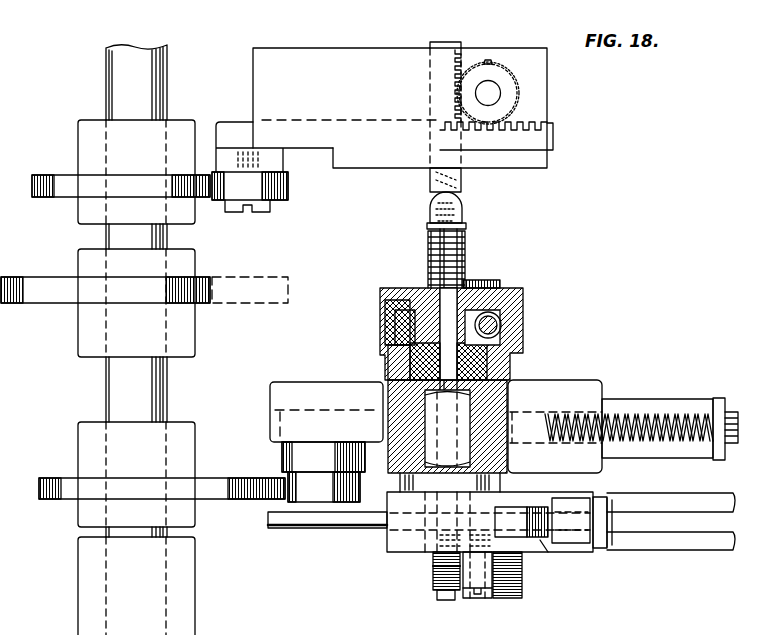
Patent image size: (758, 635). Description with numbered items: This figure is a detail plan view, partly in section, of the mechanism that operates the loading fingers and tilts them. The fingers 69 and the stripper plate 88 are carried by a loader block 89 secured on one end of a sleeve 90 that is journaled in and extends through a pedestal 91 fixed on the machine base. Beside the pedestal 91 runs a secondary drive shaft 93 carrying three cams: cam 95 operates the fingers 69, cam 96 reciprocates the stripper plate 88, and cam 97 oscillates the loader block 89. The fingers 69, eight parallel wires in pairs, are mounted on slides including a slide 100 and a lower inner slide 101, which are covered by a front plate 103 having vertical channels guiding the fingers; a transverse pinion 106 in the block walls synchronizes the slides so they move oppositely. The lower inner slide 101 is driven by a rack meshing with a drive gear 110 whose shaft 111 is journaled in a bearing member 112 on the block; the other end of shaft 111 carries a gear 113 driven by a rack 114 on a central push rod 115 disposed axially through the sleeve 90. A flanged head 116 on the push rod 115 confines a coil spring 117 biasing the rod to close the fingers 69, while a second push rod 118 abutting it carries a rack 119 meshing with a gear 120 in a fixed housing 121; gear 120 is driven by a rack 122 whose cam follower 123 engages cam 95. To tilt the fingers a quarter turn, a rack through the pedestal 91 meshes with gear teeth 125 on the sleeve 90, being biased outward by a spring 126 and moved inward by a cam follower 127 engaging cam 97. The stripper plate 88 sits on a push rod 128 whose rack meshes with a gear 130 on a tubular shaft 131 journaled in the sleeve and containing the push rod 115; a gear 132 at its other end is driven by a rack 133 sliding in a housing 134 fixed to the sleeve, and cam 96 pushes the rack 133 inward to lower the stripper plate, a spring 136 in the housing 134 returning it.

The fingers 69 is at (684, 507).
The stripper plate 88 is at (610, 542).
The loader block 89 is at (538, 548).
The sleeve 90 is at (488, 452).
The pedestal 91 is at (510, 384).
The secondary drive shaft 93 is at (106, 382).
The cam 95 is at (54, 176).
The cam 96 is at (40, 280).
The cam 97 is at (224, 478).
The slide 100 is at (598, 506).
The lower inner slide 101 is at (507, 515).
The front plate 103 is at (576, 540).
The transverse pinion 106 is at (540, 518).
The drive gear 110 is at (522, 590).
The shaft 111 is at (432, 572).
The bearing member 112 is at (478, 600).
The gear 113 is at (436, 588).
The rack 114 is at (446, 601).
The central push rod 115 is at (452, 268).
The flanged head 116 is at (466, 205).
The coil spring 117 is at (462, 246).
The second push rod 118 is at (430, 178).
The rack 119 is at (463, 56).
The gear 120 is at (505, 68).
The fixed housing 121 is at (548, 92).
The rack 122 is at (554, 134).
The cam follower 123 is at (286, 190).
The gear teeth 125 is at (510, 412).
The spring 126 is at (655, 415).
The cam follower 127 is at (320, 496).
The push rod 128 is at (350, 532).
The gear 130 is at (408, 527).
The tubular shaft 131 is at (386, 364).
The gear 132 is at (482, 310).
The rack 133 is at (410, 313).
The housing 134 is at (396, 338).
The spring 136 is at (502, 325).